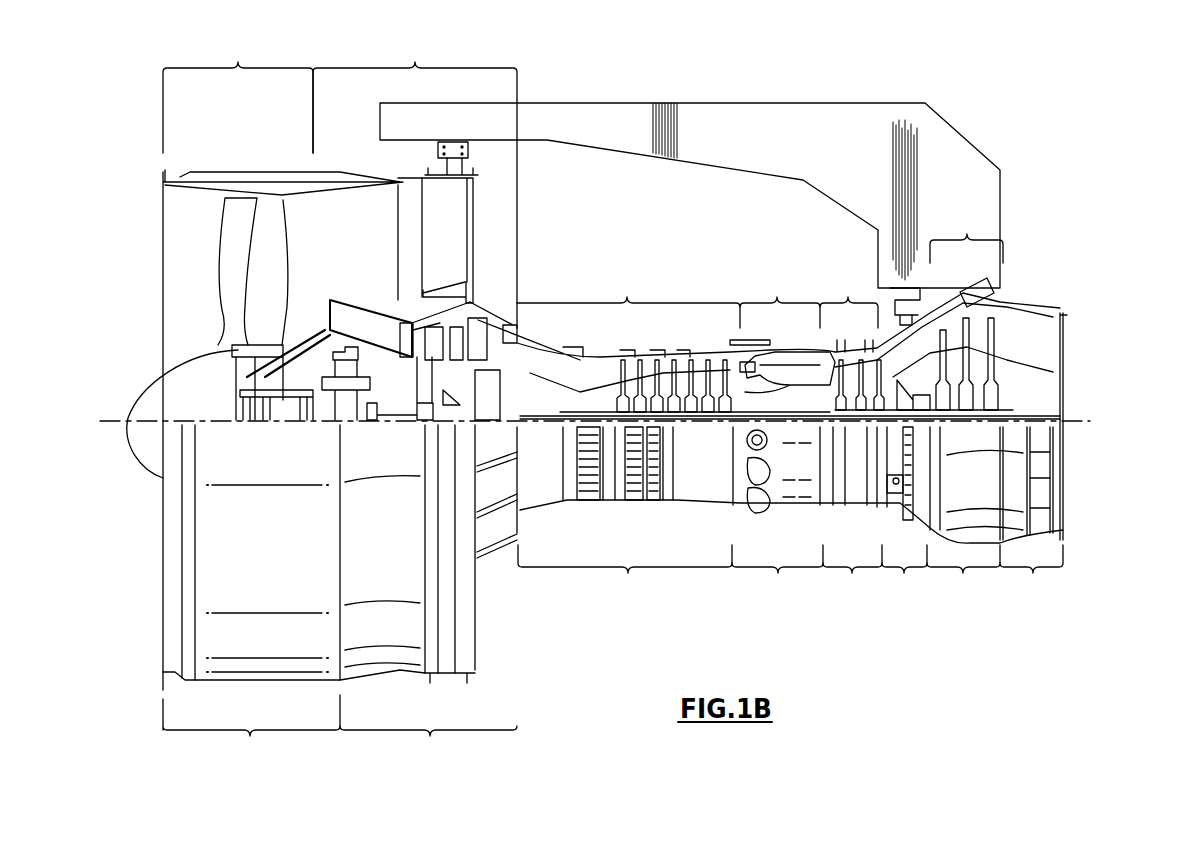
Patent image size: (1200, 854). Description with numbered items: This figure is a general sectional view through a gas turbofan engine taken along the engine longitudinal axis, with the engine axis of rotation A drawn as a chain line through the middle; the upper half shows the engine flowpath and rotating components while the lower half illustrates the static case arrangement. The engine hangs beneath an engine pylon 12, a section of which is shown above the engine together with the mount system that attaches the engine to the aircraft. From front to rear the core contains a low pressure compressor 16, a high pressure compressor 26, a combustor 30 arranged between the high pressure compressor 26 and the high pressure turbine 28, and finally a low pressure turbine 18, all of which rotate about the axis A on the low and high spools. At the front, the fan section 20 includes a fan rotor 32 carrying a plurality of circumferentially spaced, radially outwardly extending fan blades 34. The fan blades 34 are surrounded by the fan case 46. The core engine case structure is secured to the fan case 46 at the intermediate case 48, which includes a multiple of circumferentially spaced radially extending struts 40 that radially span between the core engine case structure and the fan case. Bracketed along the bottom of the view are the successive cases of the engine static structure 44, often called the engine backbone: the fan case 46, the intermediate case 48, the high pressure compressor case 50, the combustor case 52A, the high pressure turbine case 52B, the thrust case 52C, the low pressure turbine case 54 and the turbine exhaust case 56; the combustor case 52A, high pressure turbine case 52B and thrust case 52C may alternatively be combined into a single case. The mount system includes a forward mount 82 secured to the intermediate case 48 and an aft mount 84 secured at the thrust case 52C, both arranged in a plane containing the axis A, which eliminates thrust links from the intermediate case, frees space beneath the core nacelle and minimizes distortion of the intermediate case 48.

The engine pylon 12 is at (818, 122).
The low pressure compressor 16 is at (415, 183).
The low pressure turbine 18 is at (966, 235).
The fan section 20 is at (238, 95).
The high pressure compressor 26 is at (628, 299).
The high pressure turbine 28 is at (849, 299).
The combustor 30 is at (780, 299).
The fan rotor 32 is at (150, 365).
The fan blades 34 is at (240, 288).
The struts 40 is at (459, 230).
The engine static structure 44 is at (1120, 515).
The fan case 46 is at (319, 469).
The intermediate case (IMC) 48 is at (428, 596).
The high pressure compressor case 50 is at (625, 573).
The combustor case 52A is at (777, 573).
The high pressure turbine case 52B is at (852, 573).
The thrust case 52C is at (904, 573).
The low pressure turbine case 54 is at (963, 573).
The turbine exhaust case 56 is at (1031, 573).
The forward mount 82 is at (470, 148).
The aft mount 84 is at (1010, 290).
The engine axis of rotation A is at (1078, 421).